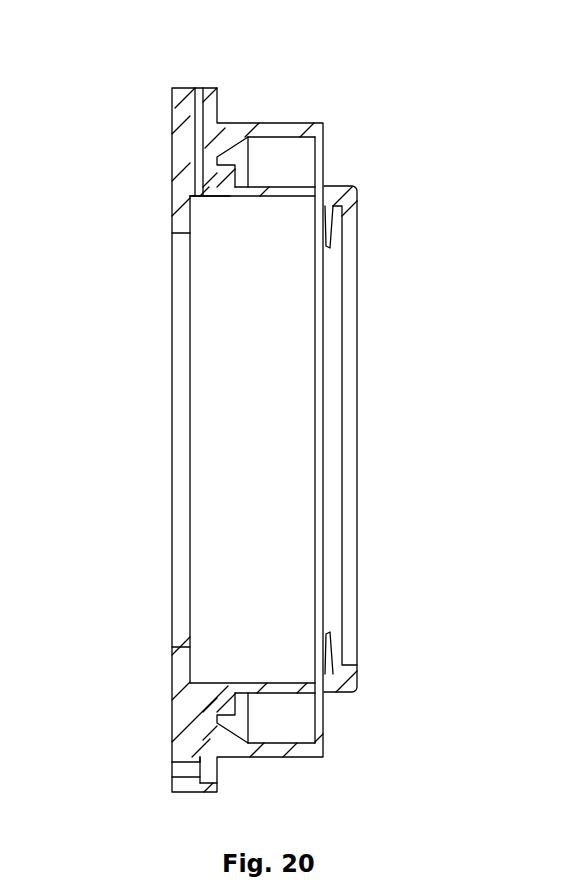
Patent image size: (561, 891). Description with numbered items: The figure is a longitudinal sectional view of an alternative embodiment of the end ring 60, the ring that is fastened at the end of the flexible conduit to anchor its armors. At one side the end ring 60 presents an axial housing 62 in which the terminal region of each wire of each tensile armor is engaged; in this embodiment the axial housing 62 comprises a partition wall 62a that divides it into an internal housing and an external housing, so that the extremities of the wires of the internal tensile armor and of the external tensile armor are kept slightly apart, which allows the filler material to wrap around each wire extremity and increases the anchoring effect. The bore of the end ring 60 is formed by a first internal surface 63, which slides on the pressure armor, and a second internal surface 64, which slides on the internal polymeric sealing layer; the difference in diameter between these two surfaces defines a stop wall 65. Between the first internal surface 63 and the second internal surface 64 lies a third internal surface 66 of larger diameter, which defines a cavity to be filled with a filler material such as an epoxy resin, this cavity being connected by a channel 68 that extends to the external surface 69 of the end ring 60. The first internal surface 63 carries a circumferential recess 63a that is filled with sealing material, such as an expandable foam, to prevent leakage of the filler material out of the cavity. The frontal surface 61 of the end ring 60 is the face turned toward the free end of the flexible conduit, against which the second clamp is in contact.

The end ring 60 is at (171, 108).
The frontal surface 61 is at (172, 158).
The axial housing 62 is at (277, 136).
The partition wall 62a is at (238, 166).
The first internal surface 63 is at (348, 216).
The circumferential recess 63a is at (331, 212).
The second internal surface 64 is at (185, 238).
The stop wall 65 is at (193, 200).
The third internal surface 66 is at (265, 197).
The channel 68 is at (200, 90).
The external surface 69 is at (181, 90).